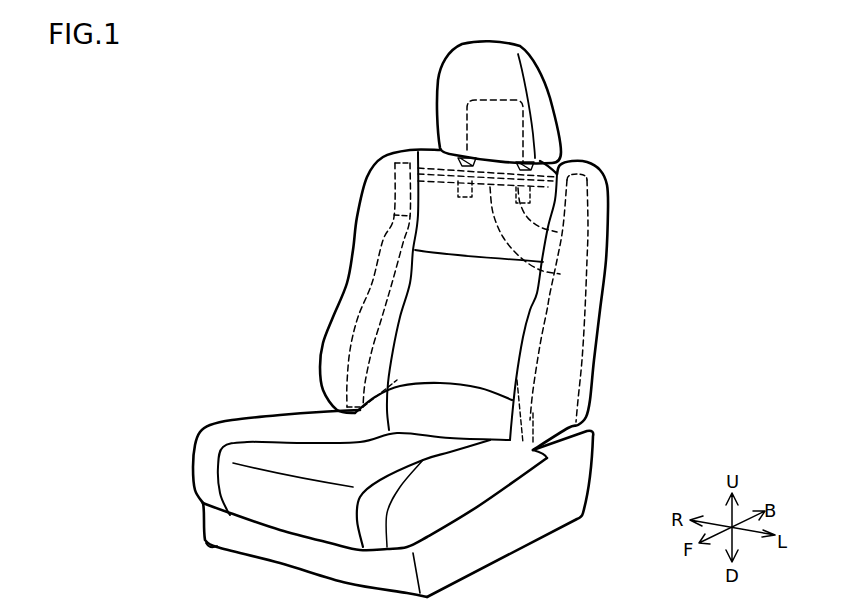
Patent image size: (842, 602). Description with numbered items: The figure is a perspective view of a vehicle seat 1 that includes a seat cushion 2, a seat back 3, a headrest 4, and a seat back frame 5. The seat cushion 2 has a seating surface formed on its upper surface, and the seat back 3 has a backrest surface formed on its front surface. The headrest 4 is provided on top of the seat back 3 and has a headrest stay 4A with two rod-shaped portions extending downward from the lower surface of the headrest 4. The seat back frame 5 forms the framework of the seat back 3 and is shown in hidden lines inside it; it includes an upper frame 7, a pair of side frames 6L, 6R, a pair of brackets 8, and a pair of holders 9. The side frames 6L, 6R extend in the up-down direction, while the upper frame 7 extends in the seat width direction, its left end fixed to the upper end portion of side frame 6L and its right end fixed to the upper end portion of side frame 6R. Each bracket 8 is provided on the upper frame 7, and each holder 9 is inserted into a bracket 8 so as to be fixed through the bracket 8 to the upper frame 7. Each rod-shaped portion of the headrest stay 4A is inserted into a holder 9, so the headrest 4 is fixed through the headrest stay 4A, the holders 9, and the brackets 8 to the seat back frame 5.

The vehicle seat 1 is at (294, 85).
The seat cushion 2 is at (347, 460).
The seat back 3 is at (463, 283).
The headrest 4 is at (458, 91).
The headrest stay 4A is at (523, 120).
The seat back frame 5 is at (686, 192).
The side frame 6R is at (390, 307).
The side frame 6L is at (563, 383).
The upper frame 7 is at (560, 274).
The bracket 8 is at (556, 177).
The holder 9 is at (557, 232).